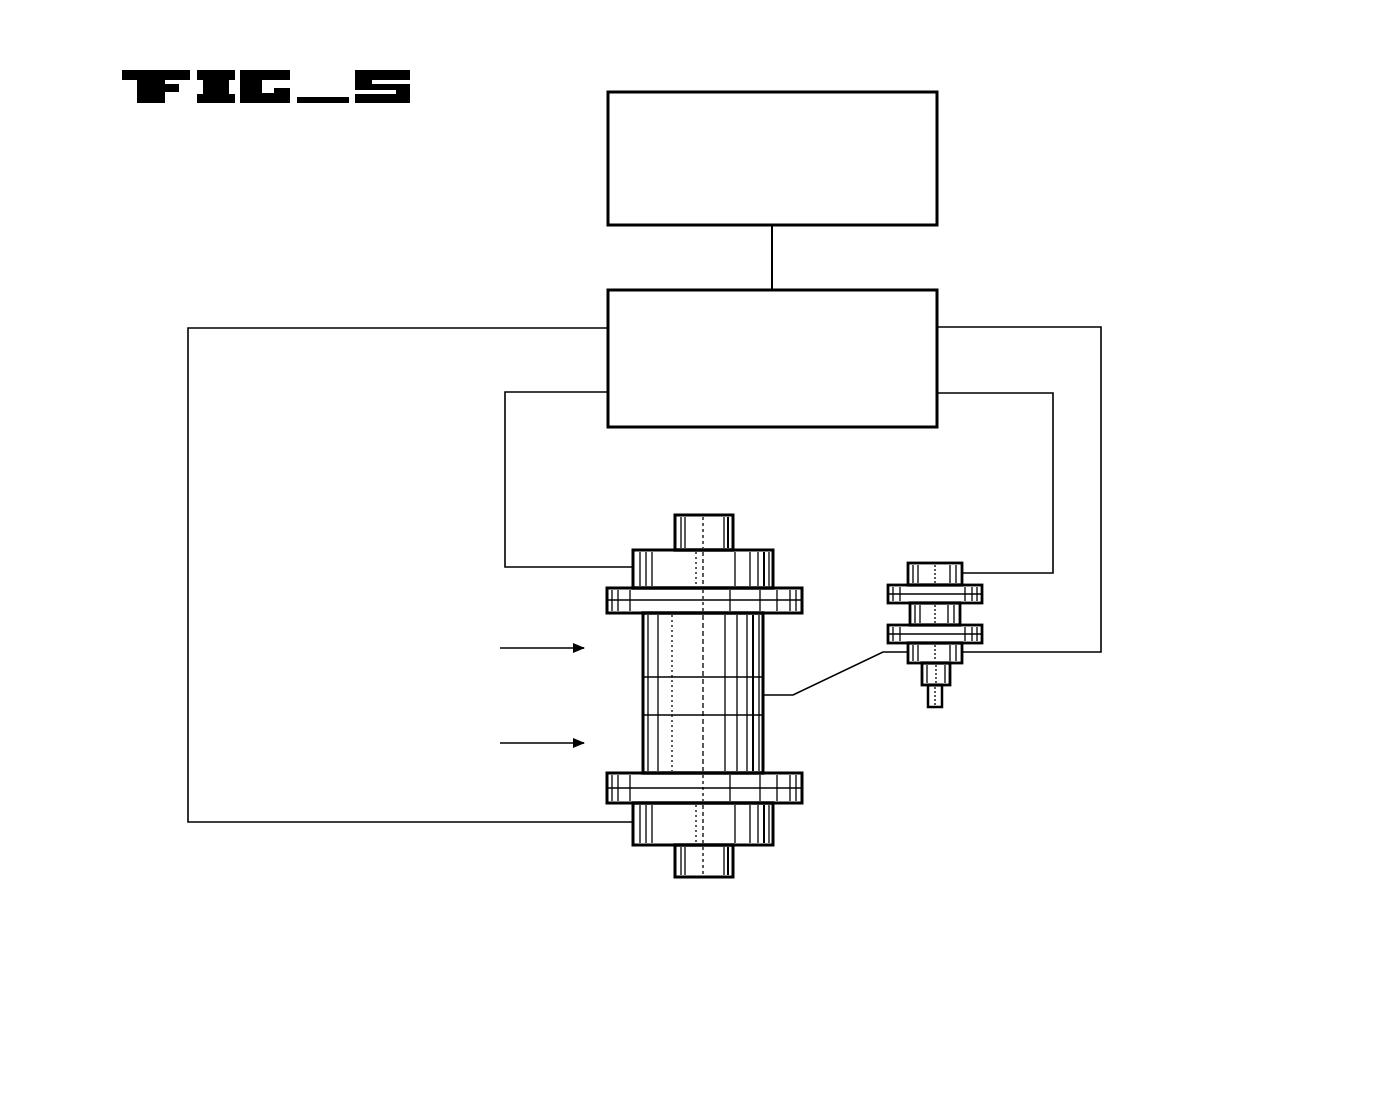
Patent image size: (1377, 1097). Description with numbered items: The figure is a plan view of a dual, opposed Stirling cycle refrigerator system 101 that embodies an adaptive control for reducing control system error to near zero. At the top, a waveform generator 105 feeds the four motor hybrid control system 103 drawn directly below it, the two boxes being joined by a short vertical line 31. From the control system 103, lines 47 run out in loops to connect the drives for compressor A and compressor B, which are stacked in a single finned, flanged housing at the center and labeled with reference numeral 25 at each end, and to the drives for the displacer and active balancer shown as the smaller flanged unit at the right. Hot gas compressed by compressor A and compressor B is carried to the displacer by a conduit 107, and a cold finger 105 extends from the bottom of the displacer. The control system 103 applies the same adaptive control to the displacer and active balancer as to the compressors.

The dual, opposed Stirling cycle refrigerator system 101 is at (984, 175).
The four motor hybrid control system 103 is at (910, 288).
The waveform generator 105 is at (940, 108).
The waveform signal line 31 is at (774, 258).
The lines 47 is at (268, 327).
The compressor assembly 25 is at (735, 517).
The conduit 107 is at (838, 674).